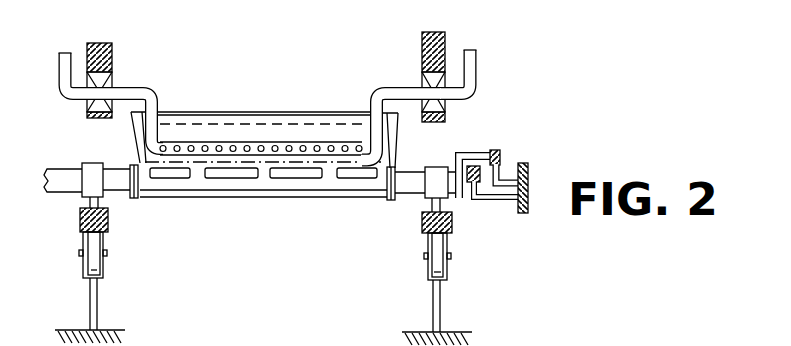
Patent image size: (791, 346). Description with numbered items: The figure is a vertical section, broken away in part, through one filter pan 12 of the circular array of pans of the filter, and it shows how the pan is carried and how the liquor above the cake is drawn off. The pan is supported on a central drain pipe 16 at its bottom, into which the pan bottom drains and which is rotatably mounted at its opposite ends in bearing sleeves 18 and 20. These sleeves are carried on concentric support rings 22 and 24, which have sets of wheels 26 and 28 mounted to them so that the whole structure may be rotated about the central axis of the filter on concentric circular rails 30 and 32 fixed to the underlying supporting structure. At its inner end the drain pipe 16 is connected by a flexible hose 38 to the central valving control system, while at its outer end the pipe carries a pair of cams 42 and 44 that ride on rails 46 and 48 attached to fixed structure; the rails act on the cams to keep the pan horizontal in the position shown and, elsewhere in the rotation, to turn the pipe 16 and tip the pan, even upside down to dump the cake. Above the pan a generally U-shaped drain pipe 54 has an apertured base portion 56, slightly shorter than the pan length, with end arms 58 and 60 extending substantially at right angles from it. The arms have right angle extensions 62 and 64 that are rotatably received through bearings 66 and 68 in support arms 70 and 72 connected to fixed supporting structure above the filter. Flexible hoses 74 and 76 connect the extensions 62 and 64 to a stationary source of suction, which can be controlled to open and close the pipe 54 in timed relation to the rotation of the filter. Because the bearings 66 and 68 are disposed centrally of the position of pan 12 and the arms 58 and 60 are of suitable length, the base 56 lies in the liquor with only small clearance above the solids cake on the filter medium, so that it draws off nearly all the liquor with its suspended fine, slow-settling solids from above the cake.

The filter pan 12 is at (399, 145).
The central drain pipe 16 is at (296, 192).
The bearing sleeve 18 is at (432, 180).
The bearing sleeve 20 is at (93, 170).
The support ring 22 is at (422, 228).
The support ring 24 is at (108, 221).
The wheels 26 is at (440, 250).
The wheels 28 is at (95, 252).
The circular rail 30 is at (440, 298).
The circular rail 32 is at (97, 295).
The flexible hose 38 is at (62, 190).
The cam 42 is at (500, 150).
The cam 44 is at (473, 186).
The rail 46 is at (525, 166).
The rail 48 is at (521, 207).
The U-shaped drain pipe 54 is at (373, 93).
The apertured base portion 56 is at (227, 156).
The end arm 58 is at (368, 112).
The end arm 60 is at (155, 108).
The right angle extension 62 is at (401, 89).
The right angle extension 64 is at (137, 90).
The bearing 66 is at (447, 108).
The bearing 68 is at (112, 62).
The support arm 70 is at (424, 36).
The support arm 72 is at (98, 43).
The flexible hose 74 is at (471, 70).
The flexible hose 76 is at (64, 52).